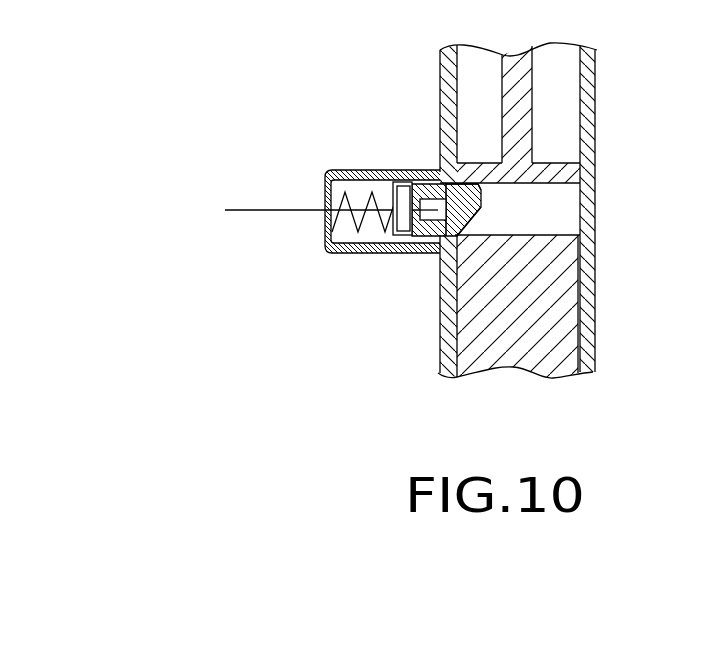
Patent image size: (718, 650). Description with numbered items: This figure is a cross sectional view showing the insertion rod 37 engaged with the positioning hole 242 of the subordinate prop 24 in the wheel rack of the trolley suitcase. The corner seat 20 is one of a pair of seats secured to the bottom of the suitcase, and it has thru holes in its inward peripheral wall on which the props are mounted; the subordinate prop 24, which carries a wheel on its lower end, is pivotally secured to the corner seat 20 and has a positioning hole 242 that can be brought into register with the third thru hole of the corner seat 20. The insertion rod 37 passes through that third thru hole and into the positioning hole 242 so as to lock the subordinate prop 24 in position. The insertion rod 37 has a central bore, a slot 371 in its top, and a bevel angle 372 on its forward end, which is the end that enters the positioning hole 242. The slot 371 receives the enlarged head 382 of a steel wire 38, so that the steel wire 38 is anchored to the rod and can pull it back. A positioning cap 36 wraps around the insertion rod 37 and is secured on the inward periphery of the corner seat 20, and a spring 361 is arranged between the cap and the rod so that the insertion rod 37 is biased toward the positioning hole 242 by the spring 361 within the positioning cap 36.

The corner seat 20 is at (595, 110).
The subordinate prop 24 is at (568, 334).
The positioning hole 242 is at (560, 212).
The positioning cap 36 is at (340, 170).
The spring 361 is at (352, 225).
The insertion rod 37 is at (423, 228).
The slot 371 is at (433, 193).
The bevel angle 372 is at (455, 227).
The steel wire 38 is at (277, 210).
The enlarged head 382 is at (481, 190).